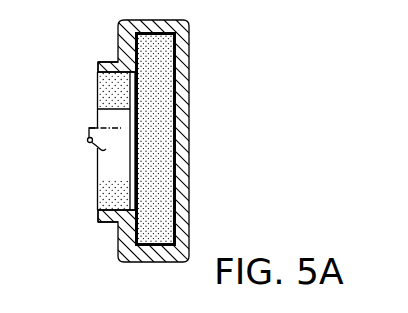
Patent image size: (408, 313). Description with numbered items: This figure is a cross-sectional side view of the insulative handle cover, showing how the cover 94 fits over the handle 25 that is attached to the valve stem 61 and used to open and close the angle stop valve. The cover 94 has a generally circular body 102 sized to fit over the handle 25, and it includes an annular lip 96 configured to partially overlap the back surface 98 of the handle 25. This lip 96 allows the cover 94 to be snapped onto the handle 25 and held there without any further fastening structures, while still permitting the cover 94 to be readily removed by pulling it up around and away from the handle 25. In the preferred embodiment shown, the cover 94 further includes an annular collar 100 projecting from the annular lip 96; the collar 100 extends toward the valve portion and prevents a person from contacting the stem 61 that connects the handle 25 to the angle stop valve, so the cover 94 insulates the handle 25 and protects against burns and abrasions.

The cover 94 is at (192, 32).
The handle 25 is at (168, 178).
The circular body 102 is at (162, 99).
The annular collar 100 is at (109, 63).
The annular lip 96 is at (118, 232).
The back surface 98 is at (96, 108).
The valve stem 61 is at (94, 147).